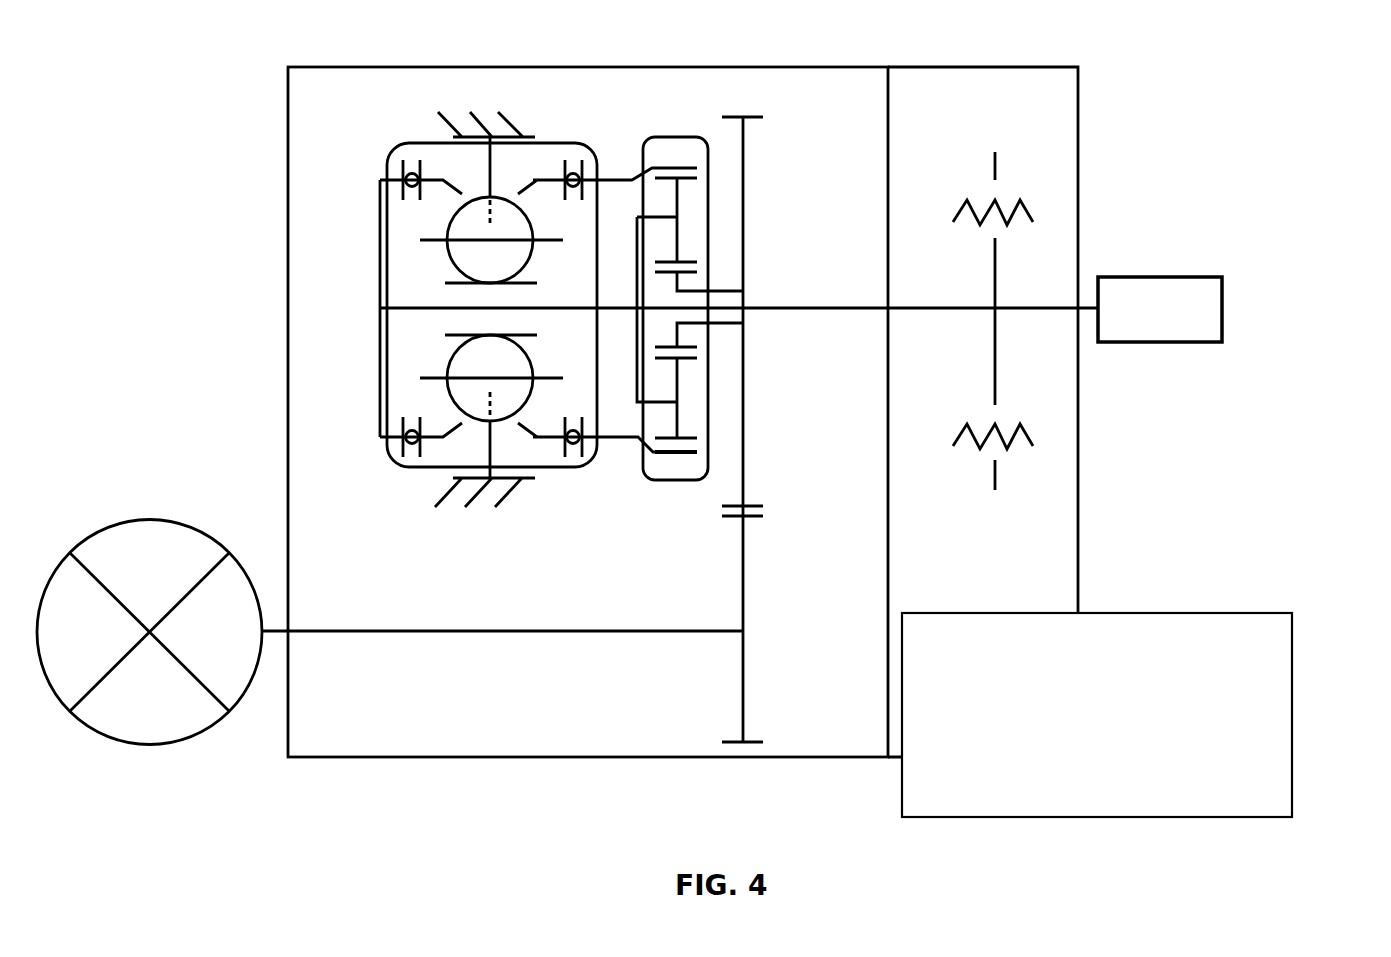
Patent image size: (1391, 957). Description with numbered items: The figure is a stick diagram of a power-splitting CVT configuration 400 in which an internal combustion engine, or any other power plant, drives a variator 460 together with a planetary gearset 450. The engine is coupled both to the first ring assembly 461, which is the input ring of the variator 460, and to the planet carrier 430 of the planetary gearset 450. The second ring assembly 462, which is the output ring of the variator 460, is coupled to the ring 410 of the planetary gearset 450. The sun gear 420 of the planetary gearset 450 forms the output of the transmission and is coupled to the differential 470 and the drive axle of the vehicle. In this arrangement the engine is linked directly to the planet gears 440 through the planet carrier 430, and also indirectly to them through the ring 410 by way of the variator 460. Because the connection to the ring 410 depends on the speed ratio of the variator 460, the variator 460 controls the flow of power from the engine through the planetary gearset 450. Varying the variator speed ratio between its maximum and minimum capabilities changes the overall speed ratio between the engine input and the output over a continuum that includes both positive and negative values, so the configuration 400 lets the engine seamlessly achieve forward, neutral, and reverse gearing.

The power-splitting CVT configuration 400 is at (214, 158).
The ring 410 is at (693, 455).
The sun gear 420 is at (678, 338).
The planet carrier 430 is at (640, 244).
The planet gears 440 is at (680, 190).
The planetary gearset 450 is at (680, 137).
The variator 460 is at (407, 143).
The first ring assembly 461 is at (380, 251).
The second ring assembly 462 is at (582, 445).
The differential 470 is at (743, 680).